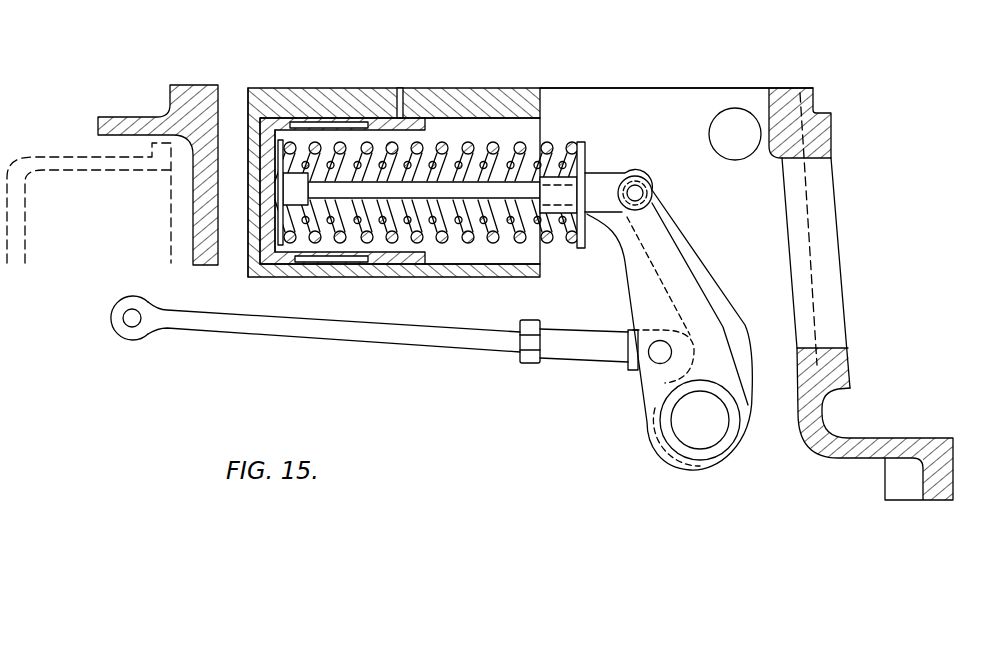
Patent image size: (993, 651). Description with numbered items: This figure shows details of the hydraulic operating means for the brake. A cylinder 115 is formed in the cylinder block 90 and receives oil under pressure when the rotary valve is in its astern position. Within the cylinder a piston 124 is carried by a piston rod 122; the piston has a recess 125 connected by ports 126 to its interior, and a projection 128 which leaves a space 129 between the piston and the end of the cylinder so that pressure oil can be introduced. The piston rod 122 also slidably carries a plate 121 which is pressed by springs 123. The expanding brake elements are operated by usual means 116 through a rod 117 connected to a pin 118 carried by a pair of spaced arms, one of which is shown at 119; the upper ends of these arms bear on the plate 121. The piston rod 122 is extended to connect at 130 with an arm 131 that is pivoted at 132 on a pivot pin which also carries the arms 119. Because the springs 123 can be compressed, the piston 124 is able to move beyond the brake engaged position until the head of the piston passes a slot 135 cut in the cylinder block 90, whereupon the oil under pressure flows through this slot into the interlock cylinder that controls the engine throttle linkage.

The cylinder block 90 is at (464, 159).
The cylinder 115 is at (515, 133).
The brake operating means 116 is at (125, 330).
The rod 117 is at (445, 338).
The pin 118 is at (656, 350).
The arm 119 is at (683, 323).
The plate 121 is at (586, 145).
The piston rod 122 is at (483, 188).
The spring 123 is at (303, 170).
The piston 124 is at (270, 203).
The recess 125 is at (325, 125).
The ports 126 is at (330, 257).
The projection 128 is at (257, 190).
The space 129 is at (257, 220).
The connection 130 is at (634, 191).
The arm 131 is at (727, 322).
The pivot 132 is at (707, 433).
The slot 135 is at (400, 88).